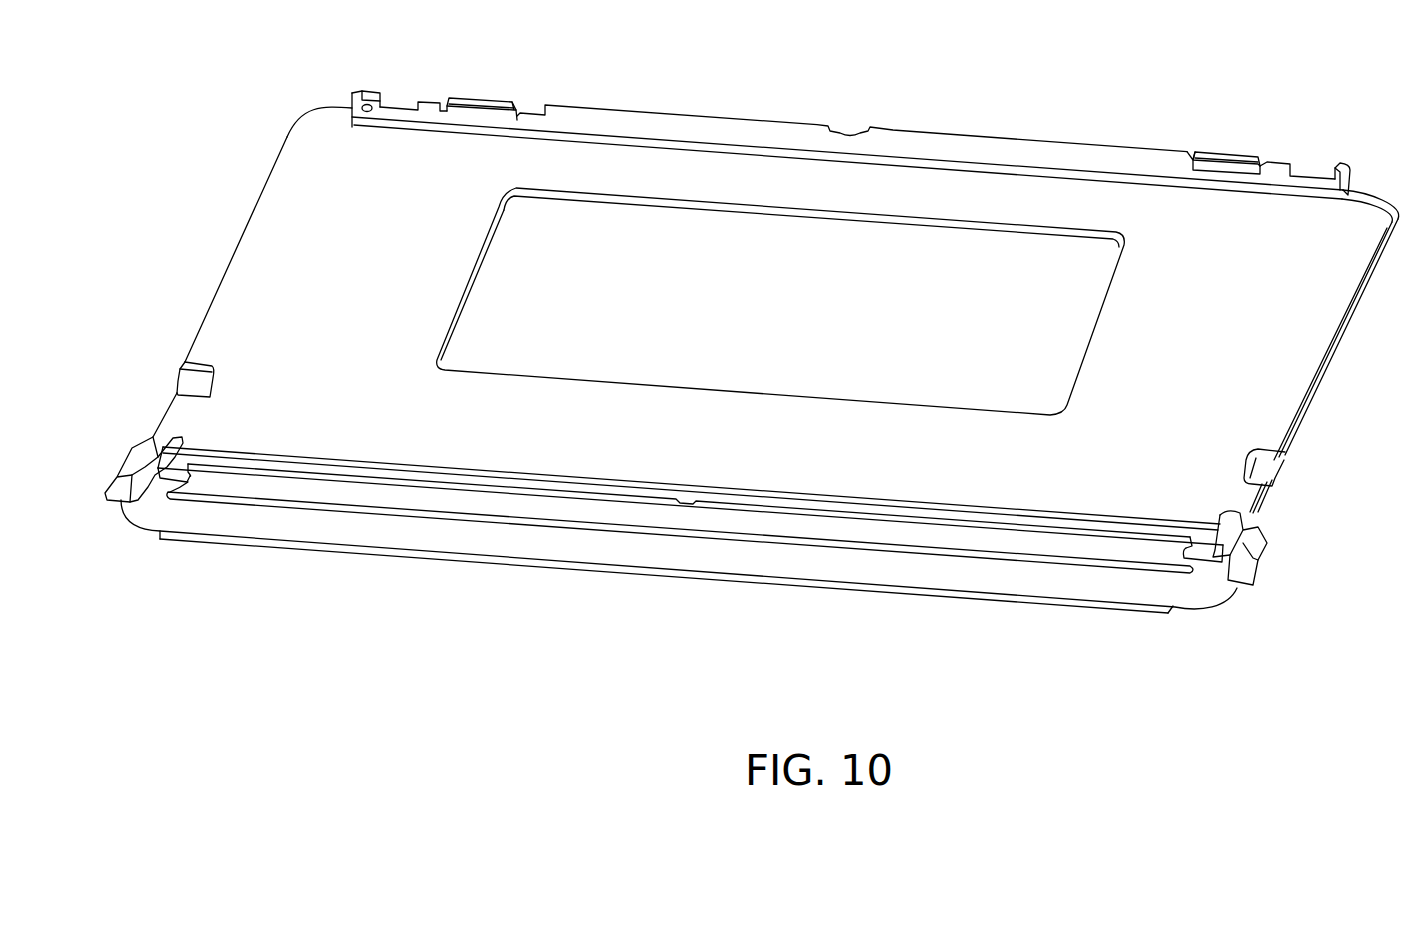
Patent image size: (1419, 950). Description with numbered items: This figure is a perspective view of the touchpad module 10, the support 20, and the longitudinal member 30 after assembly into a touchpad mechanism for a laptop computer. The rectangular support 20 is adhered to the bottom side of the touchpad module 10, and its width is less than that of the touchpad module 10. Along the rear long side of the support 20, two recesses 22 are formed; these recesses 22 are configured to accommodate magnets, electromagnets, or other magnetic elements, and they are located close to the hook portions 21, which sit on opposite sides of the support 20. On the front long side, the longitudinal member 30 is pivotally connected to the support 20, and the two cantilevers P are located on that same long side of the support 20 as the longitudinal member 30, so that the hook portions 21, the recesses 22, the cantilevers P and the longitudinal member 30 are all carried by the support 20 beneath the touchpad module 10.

The touchpad module 10 is at (388, 555).
The support 20 is at (324, 133).
The hook portion 21 is at (480, 96).
The recess 22 is at (386, 105).
The longitudinal member 30 is at (855, 538).
The cantilever P is at (135, 465).